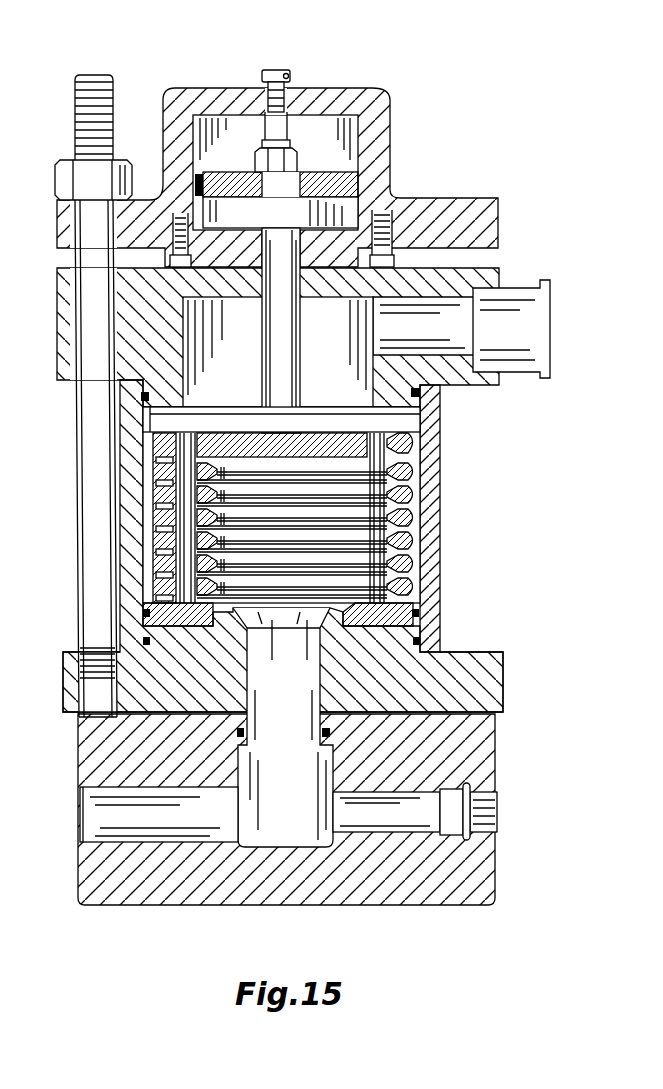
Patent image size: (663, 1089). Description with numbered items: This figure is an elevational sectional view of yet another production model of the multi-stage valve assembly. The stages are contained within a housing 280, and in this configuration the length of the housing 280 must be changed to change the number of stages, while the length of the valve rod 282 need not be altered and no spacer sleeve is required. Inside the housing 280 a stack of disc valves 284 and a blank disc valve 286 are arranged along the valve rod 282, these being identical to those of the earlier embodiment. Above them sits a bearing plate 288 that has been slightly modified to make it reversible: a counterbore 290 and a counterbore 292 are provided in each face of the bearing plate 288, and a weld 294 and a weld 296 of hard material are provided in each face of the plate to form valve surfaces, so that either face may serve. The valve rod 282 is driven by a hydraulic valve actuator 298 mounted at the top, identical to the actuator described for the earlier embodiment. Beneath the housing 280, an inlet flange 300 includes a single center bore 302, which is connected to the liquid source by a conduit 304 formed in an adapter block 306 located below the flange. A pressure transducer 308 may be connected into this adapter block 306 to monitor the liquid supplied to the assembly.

The housing 280 is at (440, 515).
The valve rod 282 is at (297, 350).
The disc valves 284 is at (412, 492).
The blank disc valve 286 is at (415, 610).
The bearing plate 288 is at (412, 443).
The counterbore 290 is at (293, 412).
The counterbore 292 is at (356, 468).
The weld 294 is at (203, 433).
The weld 296 is at (228, 470).
The hydraulic valve actuator 298 is at (206, 58).
The inlet flange 300 is at (503, 680).
The center bore 302 is at (308, 695).
The conduit 304 is at (198, 828).
The adapter block 306 is at (495, 756).
The pressure transducer 308 is at (478, 843).